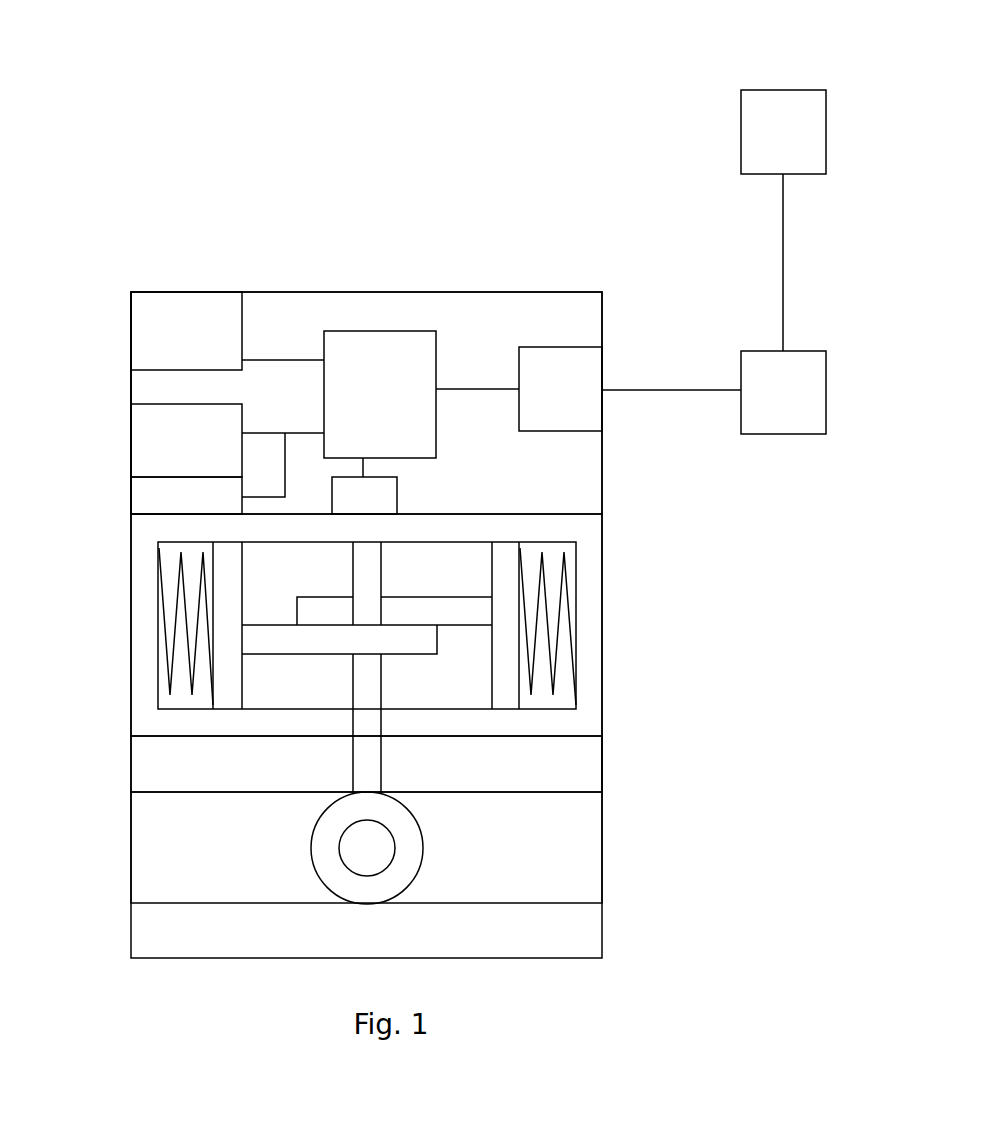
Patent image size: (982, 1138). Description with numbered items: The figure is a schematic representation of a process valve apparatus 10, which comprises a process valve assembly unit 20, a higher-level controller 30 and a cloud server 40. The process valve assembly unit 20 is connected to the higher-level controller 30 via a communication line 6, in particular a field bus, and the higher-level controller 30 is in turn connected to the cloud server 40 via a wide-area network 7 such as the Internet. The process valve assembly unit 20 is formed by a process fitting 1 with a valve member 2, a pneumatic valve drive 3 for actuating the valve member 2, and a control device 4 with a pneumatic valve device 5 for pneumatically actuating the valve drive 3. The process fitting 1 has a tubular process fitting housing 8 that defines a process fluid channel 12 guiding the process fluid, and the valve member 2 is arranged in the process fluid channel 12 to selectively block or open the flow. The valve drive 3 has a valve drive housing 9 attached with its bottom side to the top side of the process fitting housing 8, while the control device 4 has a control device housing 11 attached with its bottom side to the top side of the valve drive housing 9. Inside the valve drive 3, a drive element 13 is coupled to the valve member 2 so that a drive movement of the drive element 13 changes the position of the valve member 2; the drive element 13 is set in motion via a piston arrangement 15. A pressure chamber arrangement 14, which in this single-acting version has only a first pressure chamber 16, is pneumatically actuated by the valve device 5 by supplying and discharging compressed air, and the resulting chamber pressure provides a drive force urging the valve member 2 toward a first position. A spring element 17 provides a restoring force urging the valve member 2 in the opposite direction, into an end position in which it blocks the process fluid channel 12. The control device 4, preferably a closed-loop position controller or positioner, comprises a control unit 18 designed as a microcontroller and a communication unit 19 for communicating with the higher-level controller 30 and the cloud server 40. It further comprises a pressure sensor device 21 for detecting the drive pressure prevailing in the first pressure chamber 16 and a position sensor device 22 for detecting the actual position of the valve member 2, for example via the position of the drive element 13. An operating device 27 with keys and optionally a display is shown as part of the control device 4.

The process fitting 1 is at (131, 761).
The valve member 2 is at (415, 851).
The pneumatic valve drive 3 is at (327, 625).
The control device 4 is at (86, 396).
The pneumatic valve device 5 is at (172, 457).
The communication line 6 is at (671, 376).
The wide-area network 7 is at (773, 262).
The process fitting housing 8 is at (593, 767).
The valve drive housing 9 is at (131, 595).
The process valve apparatus 10 is at (189, 109).
The control device housing 11 is at (131, 342).
The process fluid channel 12 is at (593, 853).
The drive element 13 is at (372, 562).
The pressure chamber arrangement 14 is at (367, 647).
The piston arrangement 15 is at (237, 584).
The first pressure chamber 16 is at (443, 697).
The spring element 17 is at (167, 665).
The control unit 18 is at (365, 402).
The communication unit 19 is at (545, 402).
The process valve assembly unit 20 is at (192, 267).
The pressure sensor device 21 is at (165, 508).
The position sensor device 22 is at (349, 508).
The operating device 27 is at (171, 346).
The higher-level controller 30 is at (768, 405).
The cloud server 40 is at (768, 145).